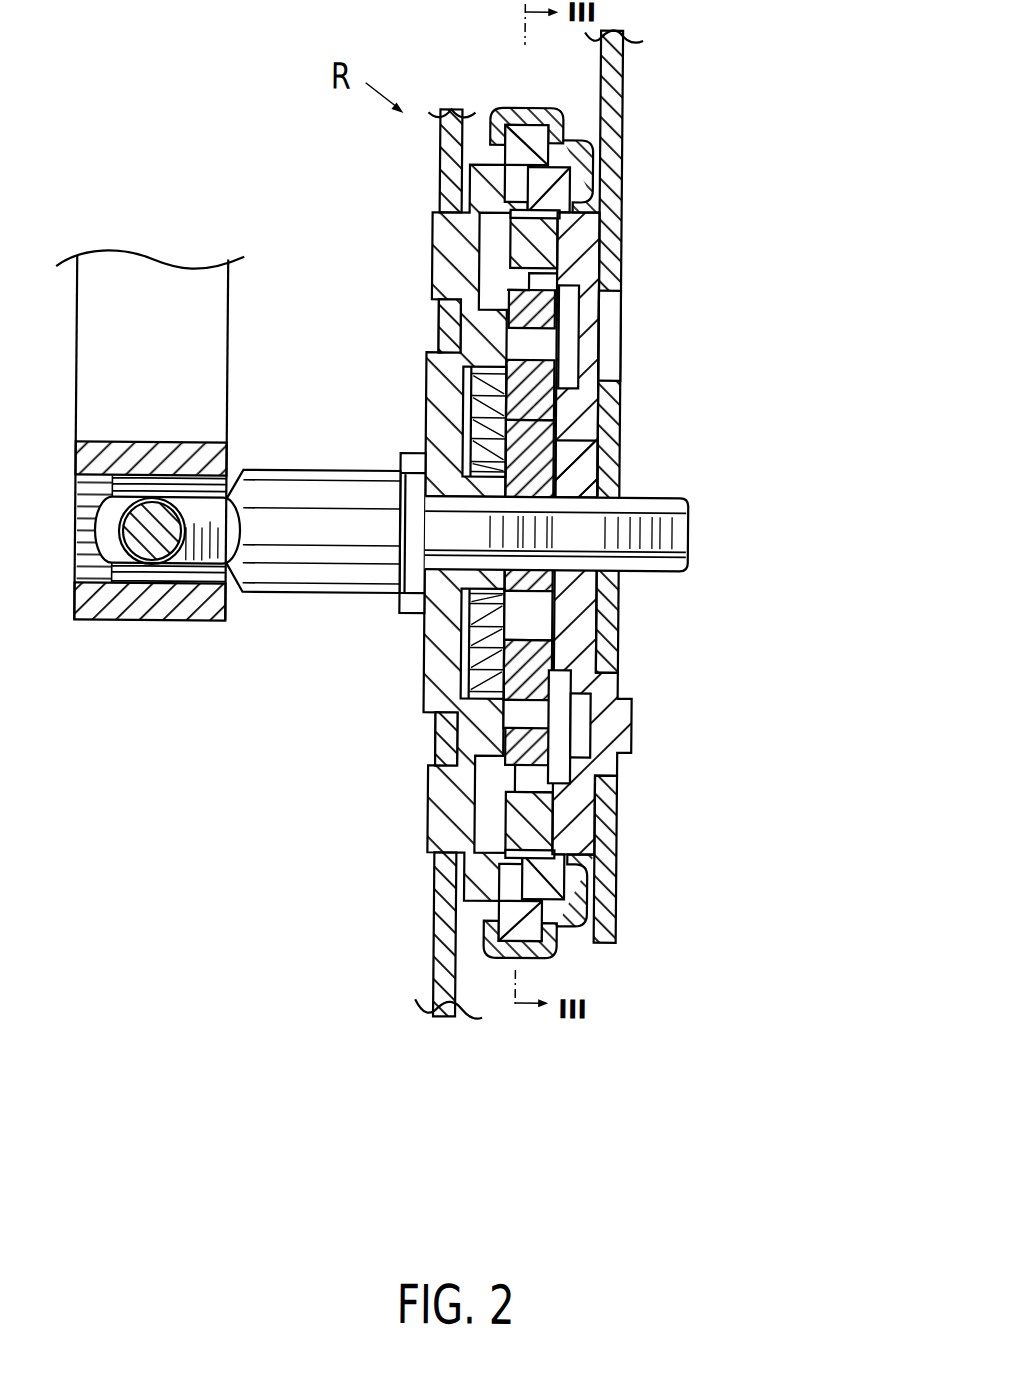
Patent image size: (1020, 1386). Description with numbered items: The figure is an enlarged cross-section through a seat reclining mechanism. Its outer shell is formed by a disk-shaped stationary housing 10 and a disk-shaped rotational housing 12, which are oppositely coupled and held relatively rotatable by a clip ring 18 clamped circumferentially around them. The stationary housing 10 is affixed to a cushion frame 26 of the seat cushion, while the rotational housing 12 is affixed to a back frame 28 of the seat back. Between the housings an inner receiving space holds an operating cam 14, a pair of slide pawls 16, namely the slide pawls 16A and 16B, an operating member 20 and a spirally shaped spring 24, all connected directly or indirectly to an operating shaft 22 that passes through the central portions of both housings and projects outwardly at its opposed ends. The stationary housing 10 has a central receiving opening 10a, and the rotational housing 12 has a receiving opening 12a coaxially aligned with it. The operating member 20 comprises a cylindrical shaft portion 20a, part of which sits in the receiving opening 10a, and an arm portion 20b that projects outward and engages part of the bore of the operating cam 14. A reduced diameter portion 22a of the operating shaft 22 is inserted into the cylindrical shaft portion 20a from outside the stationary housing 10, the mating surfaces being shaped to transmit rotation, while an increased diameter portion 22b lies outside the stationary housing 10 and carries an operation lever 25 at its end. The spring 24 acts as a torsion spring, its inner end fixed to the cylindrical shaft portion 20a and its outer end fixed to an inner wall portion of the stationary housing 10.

The stationary housing 10 is at (429, 532).
The receiving opening 10a is at (456, 596).
The rotational housing 12 is at (678, 534).
The receiving opening 12a is at (612, 498).
The operating cam 14 is at (536, 656).
The slide pawls 16 is at (535, 519).
The slide pawl 16A is at (534, 244).
The slide pawl 16B is at (503, 833).
The clip ring 18 is at (562, 130).
The operating member 20 is at (625, 525).
The cylindrical shaft portion 20a is at (453, 483).
The arm portion 20b is at (534, 439).
The operating shaft 22 is at (466, 517).
The reduced diameter portion 22a is at (680, 539).
The increased diameter portion 22b is at (307, 572).
The spring 24 is at (548, 366).
The operation lever 25 is at (171, 284).
The cushion frame 26 is at (442, 155).
The back frame 28 is at (618, 96).